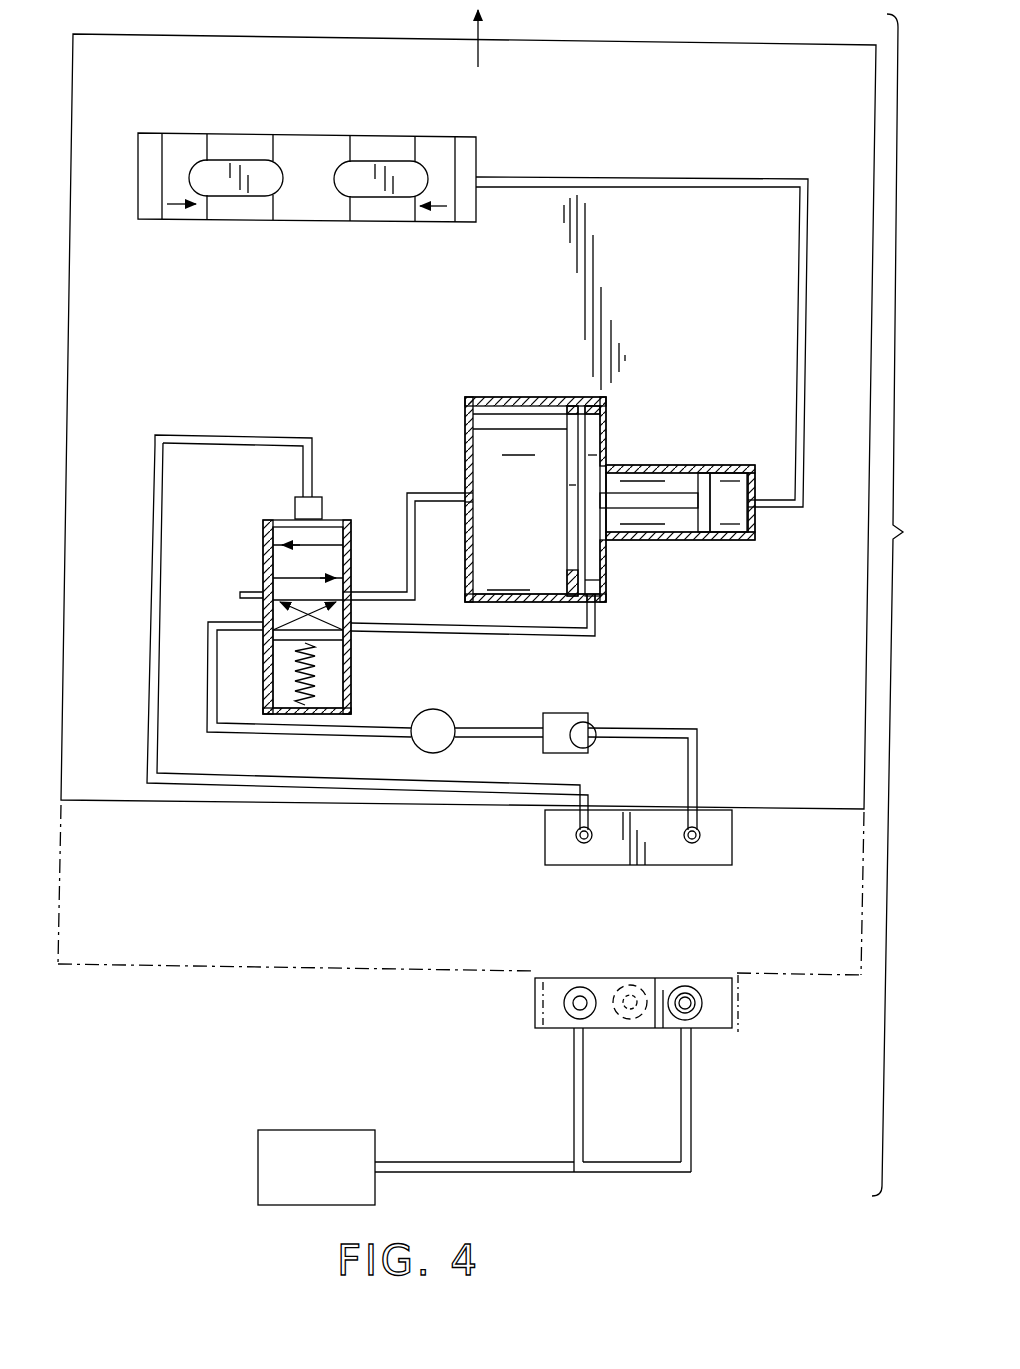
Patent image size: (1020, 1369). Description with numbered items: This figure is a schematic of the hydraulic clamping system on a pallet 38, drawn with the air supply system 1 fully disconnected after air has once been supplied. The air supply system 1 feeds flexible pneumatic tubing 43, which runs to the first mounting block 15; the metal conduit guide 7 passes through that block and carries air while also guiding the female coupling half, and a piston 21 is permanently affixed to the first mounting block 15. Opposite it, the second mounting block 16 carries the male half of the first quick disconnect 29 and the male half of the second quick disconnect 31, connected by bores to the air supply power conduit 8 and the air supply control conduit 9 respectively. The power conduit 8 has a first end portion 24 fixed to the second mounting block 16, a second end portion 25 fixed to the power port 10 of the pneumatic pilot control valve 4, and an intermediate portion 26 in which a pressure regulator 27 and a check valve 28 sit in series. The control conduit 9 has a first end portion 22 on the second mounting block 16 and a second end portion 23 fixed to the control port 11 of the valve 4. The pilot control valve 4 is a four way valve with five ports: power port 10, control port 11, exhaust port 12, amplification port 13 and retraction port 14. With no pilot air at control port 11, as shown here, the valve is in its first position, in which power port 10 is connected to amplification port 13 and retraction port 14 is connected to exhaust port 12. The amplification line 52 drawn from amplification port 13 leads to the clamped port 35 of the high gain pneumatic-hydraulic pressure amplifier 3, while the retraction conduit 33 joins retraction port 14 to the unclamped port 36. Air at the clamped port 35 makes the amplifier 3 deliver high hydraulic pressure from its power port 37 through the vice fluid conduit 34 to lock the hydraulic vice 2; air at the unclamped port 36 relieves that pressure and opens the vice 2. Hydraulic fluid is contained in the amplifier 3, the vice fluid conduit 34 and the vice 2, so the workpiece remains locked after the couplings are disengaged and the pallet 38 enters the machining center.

The air supply system 1 is at (320, 1130).
The hydraulic vice 2 is at (442, 140).
The pneumatic-hydraulic pressure amplifier 3 is at (517, 393).
The pneumatic pilot control valve 4 is at (348, 516).
The metal conduit guide 7 is at (705, 1003).
The air supply power conduit 8 is at (676, 727).
The air supply control conduit 9 is at (346, 796).
The power port 10 is at (278, 635).
The control port 11 is at (297, 506).
The exhaust port 12 is at (255, 592).
The amplification port 13 is at (349, 590).
The retraction port 14 is at (345, 632).
The first mounting block 15 is at (741, 1030).
The second mounting block 16 is at (736, 867).
The piston 21 is at (637, 996).
The first end portion of air supply control conduit 22 is at (577, 830).
The second end portion of air supply control conduit 23 is at (313, 482).
The first end portion of air supply power conduit 24 is at (700, 834).
The second end portion of air supply power conduit 25 is at (240, 623).
The intermediate portion of air supply power conduit 26 is at (494, 728).
The pressure regulator 27 is at (413, 740).
The check valve 28 is at (590, 714).
The male half of first quick disconnect 29 is at (690, 843).
The male half of second quick disconnect 31 is at (585, 843).
The retraction conduit 33 is at (502, 634).
The vice fluid conduit 34 is at (796, 302).
The clamped port 35 is at (465, 503).
The unclamped port 36 is at (600, 605).
The power port 37 is at (757, 510).
The pallet 38 is at (685, 53).
The flexible pneumatic tubing 43 is at (574, 1070).
The conduit 52 is at (437, 491).